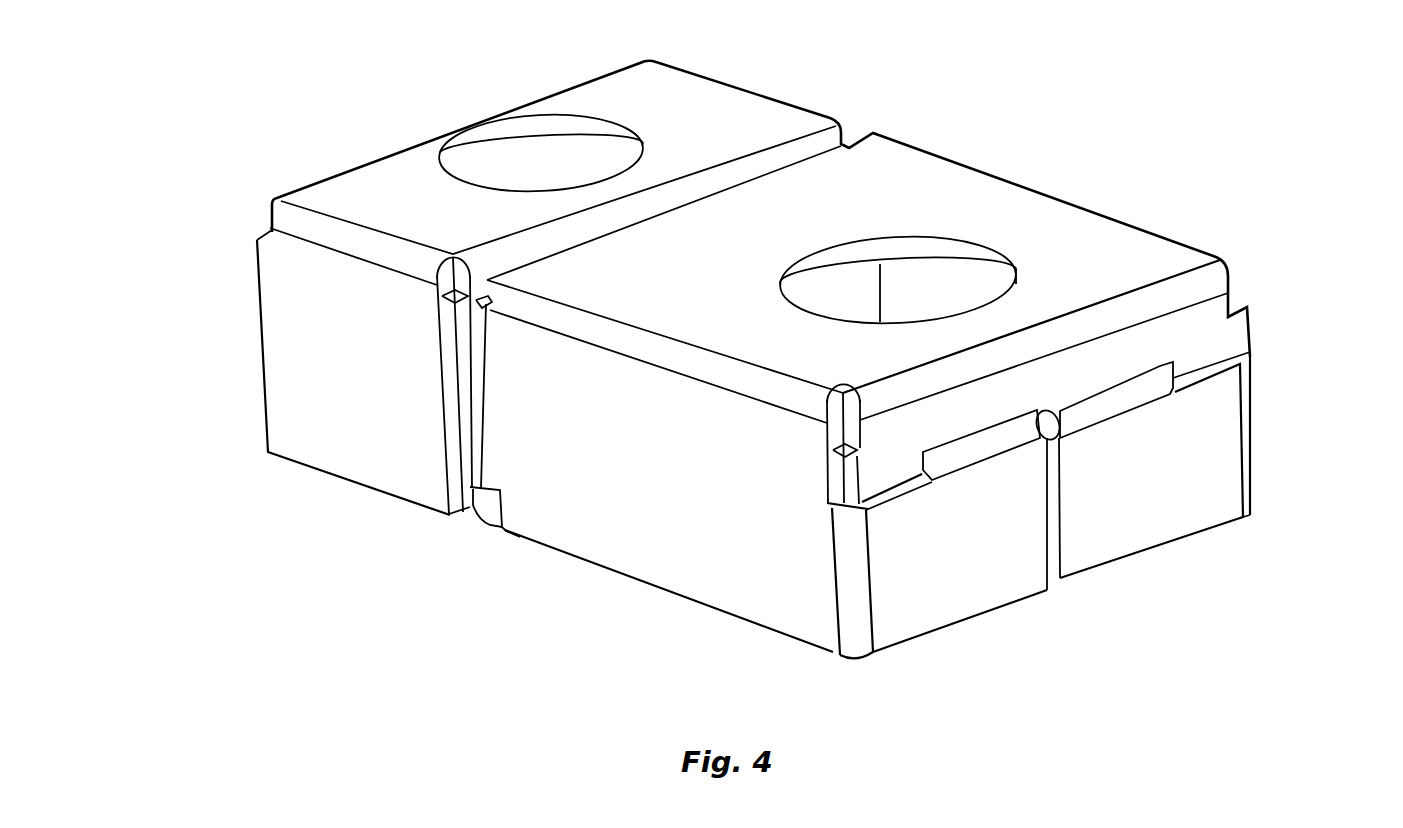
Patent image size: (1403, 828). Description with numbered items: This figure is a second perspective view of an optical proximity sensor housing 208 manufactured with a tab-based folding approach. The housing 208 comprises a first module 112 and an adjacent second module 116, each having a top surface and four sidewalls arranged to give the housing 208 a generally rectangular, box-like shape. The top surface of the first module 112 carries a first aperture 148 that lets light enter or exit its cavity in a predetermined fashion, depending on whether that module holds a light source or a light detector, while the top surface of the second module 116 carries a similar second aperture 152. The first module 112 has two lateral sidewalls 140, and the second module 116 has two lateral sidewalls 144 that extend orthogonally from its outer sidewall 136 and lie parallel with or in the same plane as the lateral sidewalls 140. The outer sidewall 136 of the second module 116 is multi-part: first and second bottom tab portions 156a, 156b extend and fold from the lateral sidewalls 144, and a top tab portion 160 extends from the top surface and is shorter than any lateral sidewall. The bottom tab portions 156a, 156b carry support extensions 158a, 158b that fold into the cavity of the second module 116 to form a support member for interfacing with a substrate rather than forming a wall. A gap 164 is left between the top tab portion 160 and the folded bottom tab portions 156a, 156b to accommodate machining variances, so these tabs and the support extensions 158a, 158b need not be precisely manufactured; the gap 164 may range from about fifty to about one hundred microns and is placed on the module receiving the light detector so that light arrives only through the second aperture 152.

The housing 208 is at (170, 249).
The first module 112 is at (370, 180).
The second module 116 is at (990, 198).
The first aperture 148 is at (568, 122).
The second aperture 152 is at (906, 246).
The top tab portion 160 is at (1076, 366).
The outer sidewall 136 is at (1296, 306).
The lateral sidewalls 140 is at (326, 420).
The lateral sidewalls 144 is at (638, 530).
The gap 164 is at (812, 505).
The first support extension 158a is at (956, 452).
The second support extension 158b is at (1110, 394).
The first bottom tab portion 156a is at (964, 600).
The second bottom tab portion 156b is at (1136, 540).